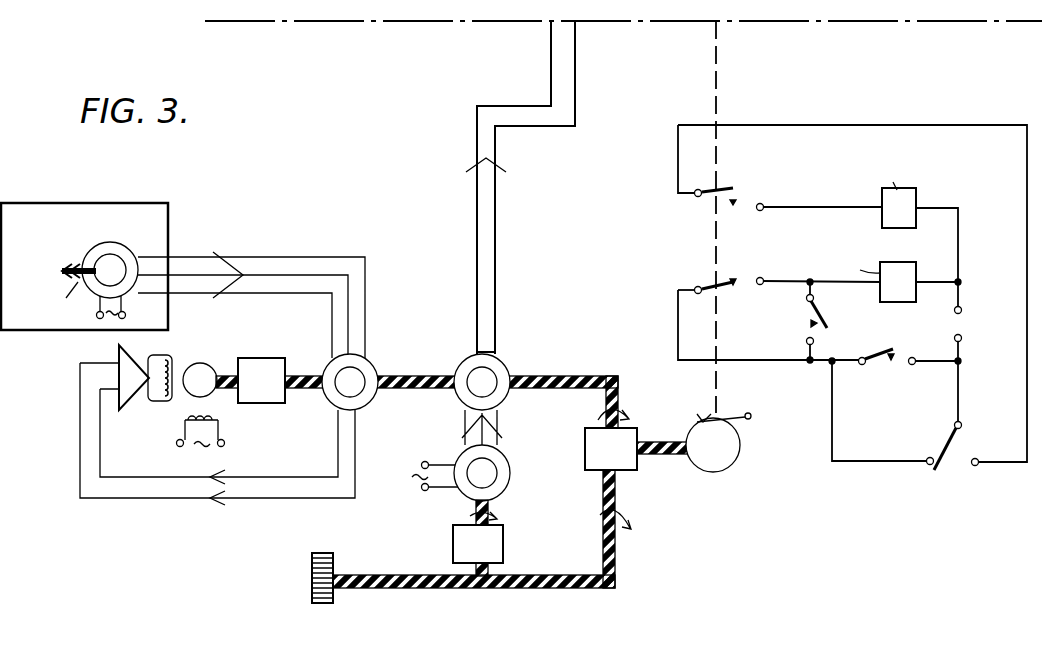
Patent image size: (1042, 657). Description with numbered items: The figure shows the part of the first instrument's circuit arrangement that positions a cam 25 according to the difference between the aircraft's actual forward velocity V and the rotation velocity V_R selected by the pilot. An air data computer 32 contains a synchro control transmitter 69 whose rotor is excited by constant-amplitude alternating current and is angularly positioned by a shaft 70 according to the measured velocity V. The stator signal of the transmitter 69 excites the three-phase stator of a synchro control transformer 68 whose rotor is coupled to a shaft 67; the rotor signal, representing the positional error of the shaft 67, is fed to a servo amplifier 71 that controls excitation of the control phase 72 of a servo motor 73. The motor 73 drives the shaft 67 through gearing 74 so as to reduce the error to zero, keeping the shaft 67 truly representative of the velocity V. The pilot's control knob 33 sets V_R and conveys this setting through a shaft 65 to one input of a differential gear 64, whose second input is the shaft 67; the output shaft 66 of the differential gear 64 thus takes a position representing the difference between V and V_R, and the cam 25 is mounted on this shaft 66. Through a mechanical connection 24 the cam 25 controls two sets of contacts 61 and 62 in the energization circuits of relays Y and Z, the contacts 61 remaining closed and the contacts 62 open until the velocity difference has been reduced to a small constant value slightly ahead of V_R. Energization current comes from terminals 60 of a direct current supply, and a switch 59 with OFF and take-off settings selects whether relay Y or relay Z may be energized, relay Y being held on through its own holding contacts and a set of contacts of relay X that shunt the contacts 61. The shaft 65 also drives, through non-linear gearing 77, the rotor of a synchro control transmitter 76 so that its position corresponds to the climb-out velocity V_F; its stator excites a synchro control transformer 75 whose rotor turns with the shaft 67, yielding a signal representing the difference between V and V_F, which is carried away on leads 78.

The mechanical connection 24 is at (716, 45).
The cam 25 is at (720, 472).
The air data computer 32 is at (130, 204).
The control knob 33 is at (312, 572).
The switch 59 is at (945, 462).
The terminals 60 is at (954, 338).
The contacts 61 is at (716, 292).
The contacts 62 is at (738, 200).
The differential gear 64 is at (592, 466).
The shaft 65 is at (618, 490).
The shaft 66 is at (655, 452).
The shaft 67 is at (425, 376).
The synchro control transformer 68 is at (368, 368).
The synchro control transmitter 69 is at (140, 250).
The shaft 70 is at (78, 290).
The servo amplifier 71 is at (110, 382).
The control phase 72 is at (175, 362).
The servo motor 73 is at (216, 370).
The gearing 74 is at (268, 366).
The synchro control transformer 75 is at (505, 372).
The synchro control transmitter 76 is at (510, 470).
The gearing 77 is at (503, 553).
The leads 78 is at (575, 42).